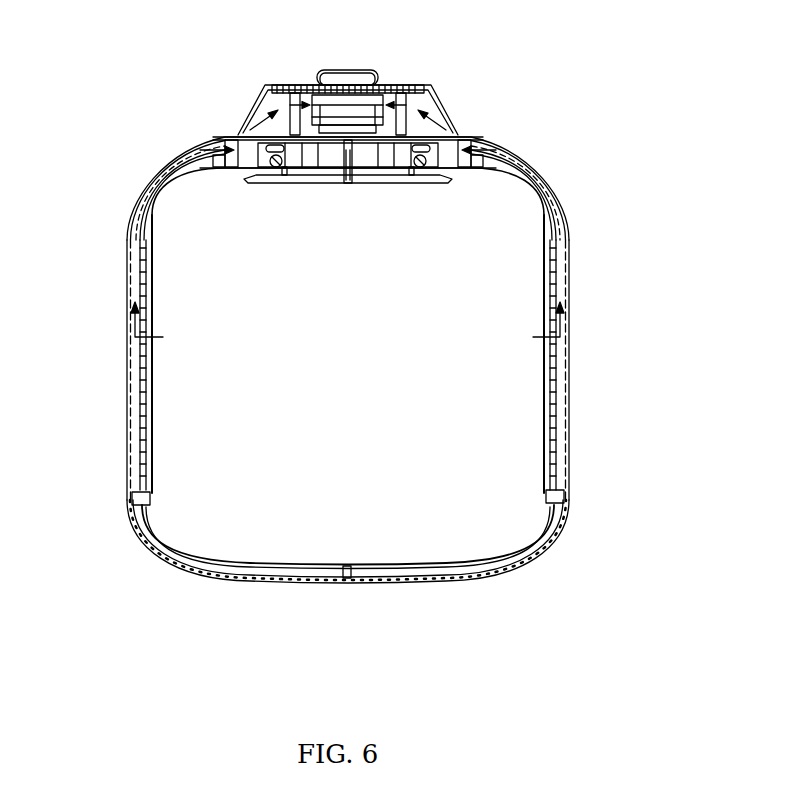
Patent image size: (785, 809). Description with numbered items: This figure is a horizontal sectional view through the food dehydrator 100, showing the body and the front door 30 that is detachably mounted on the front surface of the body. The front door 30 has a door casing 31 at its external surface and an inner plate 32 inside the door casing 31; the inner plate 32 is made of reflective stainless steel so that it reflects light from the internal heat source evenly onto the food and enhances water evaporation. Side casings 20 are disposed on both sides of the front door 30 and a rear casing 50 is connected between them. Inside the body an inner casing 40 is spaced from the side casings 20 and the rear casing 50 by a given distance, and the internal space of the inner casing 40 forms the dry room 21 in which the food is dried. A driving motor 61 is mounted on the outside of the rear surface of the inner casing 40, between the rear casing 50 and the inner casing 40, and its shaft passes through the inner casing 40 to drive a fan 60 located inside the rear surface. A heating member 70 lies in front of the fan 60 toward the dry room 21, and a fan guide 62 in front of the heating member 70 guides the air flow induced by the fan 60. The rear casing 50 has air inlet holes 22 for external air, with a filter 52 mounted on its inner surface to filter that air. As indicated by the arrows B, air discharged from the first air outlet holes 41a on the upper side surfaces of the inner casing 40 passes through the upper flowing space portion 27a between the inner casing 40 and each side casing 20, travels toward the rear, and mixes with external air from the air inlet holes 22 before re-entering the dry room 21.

The food dehydrator 100 is at (484, 78).
The side casings 20 is at (127, 325).
The dry room 21 is at (226, 401).
The air inlet holes 22 is at (300, 128).
The upper flowing space portion 27a is at (185, 158).
The front door 30 is at (431, 648).
The door casing 31 is at (400, 583).
The inner plate 32 is at (423, 568).
The inner casing 40 is at (137, 265).
The first air outlet holes 41a is at (142, 352).
The rear casing 50 is at (448, 130).
The filter 52 is at (338, 85).
The fan 60 is at (367, 147).
The driving motor 61 is at (353, 103).
The fan guide 62 is at (350, 187).
The heating member 70 is at (313, 163).